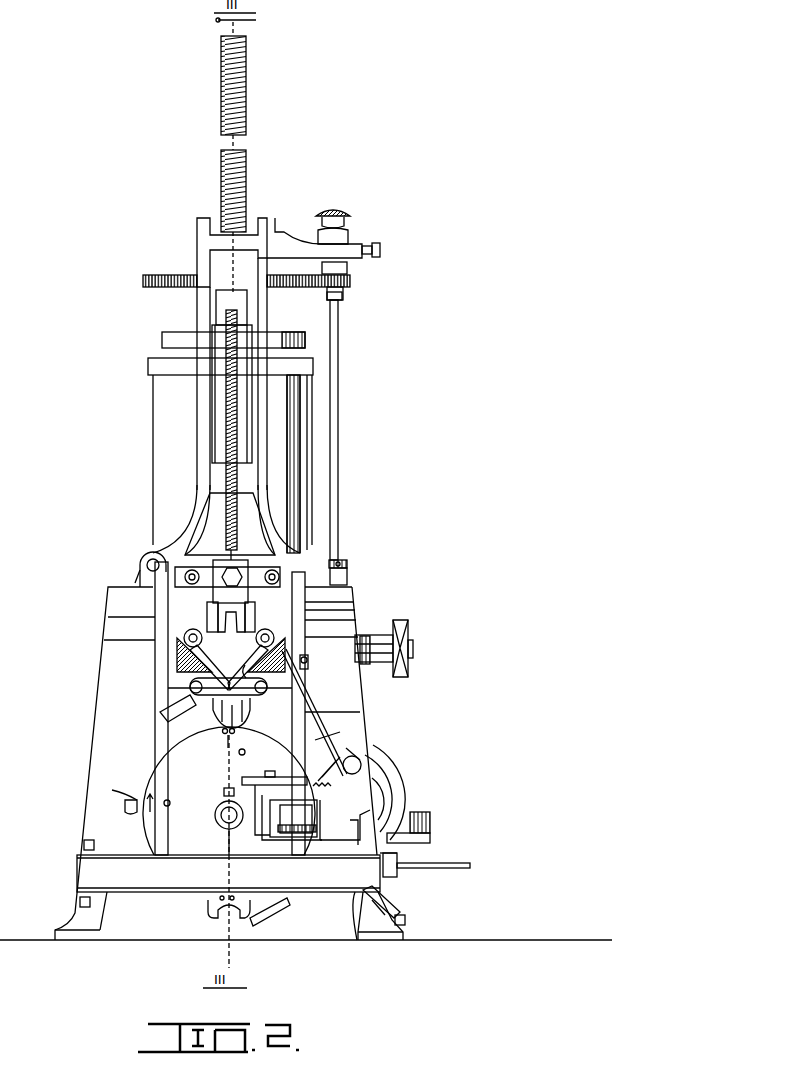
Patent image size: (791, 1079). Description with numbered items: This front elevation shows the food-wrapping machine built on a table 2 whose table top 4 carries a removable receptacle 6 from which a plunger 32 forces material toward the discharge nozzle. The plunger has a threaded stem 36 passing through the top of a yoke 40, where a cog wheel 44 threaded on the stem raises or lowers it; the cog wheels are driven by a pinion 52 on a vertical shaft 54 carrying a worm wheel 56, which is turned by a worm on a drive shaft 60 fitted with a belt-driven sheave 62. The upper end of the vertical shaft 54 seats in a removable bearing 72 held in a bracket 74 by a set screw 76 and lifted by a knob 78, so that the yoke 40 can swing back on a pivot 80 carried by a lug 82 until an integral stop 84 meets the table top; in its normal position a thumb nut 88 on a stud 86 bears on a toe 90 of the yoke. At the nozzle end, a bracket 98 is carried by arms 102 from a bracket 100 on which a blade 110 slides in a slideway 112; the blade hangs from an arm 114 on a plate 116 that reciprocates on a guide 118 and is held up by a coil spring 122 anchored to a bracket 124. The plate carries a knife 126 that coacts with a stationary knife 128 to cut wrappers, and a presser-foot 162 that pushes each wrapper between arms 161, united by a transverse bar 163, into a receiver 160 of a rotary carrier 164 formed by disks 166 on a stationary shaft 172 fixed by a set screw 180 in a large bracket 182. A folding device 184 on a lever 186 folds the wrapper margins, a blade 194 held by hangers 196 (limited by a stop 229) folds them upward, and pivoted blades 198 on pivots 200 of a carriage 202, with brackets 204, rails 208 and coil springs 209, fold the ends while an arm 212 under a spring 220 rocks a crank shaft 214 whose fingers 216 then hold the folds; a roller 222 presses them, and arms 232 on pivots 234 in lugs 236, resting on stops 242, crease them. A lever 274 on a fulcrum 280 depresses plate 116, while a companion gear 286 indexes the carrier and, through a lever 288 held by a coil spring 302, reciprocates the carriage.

The table 2 is at (100, 746).
The table top 4 is at (112, 602).
The removable receptacle 6 is at (160, 412).
The plunger 32 is at (165, 338).
The threaded stem 36 is at (222, 110).
The yoke 40 is at (208, 272).
The cog wheel 44 is at (143, 281).
The pinion 52 is at (350, 284).
The vertical shaft 54 is at (338, 413).
The worm wheel 56 is at (365, 662).
The drive shaft 60 is at (392, 655).
The sheave 62 is at (405, 672).
The removable bearing 72 is at (349, 269).
The bracket 74 is at (350, 243).
The set screw 76 is at (381, 249).
The knob 78 is at (338, 218).
The pivot 80 is at (153, 558).
The lug 82 is at (152, 578).
The integral stop 84 is at (138, 580).
The stud 86 is at (342, 560).
The thumb nut 88 is at (348, 563).
The toe 90 is at (348, 580).
The bracket 98 is at (205, 665).
The bracket 100 is at (185, 630).
The arm 102 is at (186, 578).
The blade 110 is at (215, 597).
The slideway 112 is at (210, 612).
The arm 114 is at (226, 575).
The plate 116 is at (352, 608).
The guide 118 is at (400, 640).
The coil spring 122 is at (228, 438).
The bracket 124 is at (218, 308).
The knife 126 is at (205, 680).
The stationary knife 128 is at (228, 692).
The receiver 160 is at (125, 800).
The arm 161 is at (308, 665).
The presser-foot 162 is at (245, 657).
The transverse bar 163 is at (215, 690).
The rotary carrier 164 is at (162, 775).
The disk 166 is at (165, 750).
The stationary shaft 172 is at (226, 822).
The set screw 180 is at (225, 790).
The bracket 182 is at (100, 870).
The folding device 184 is at (268, 922).
The lever 186 is at (280, 905).
The blade 194 is at (340, 731).
The hanger 196 is at (318, 712).
The pivoted blade 198 is at (297, 821).
The pivot 200 is at (275, 838).
The carriage 202 is at (398, 878).
The bracket 204 is at (255, 835).
The rail 208 is at (470, 865).
The coil spring 209 is at (322, 840).
The arm 212 is at (274, 766).
The crank shaft 214 is at (375, 772).
The finger 216 is at (392, 793).
The spring 220 is at (238, 755).
The roller 222 is at (357, 846).
The stop 229 is at (310, 693).
The arm 232 is at (357, 898).
The pivot 234 is at (380, 917).
The lug 236 is at (398, 910).
The stop 242 is at (405, 925).
The lever 274 is at (350, 749).
The fulcrum 280 is at (361, 762).
The companion gear 286 is at (400, 802).
The lever 288 is at (431, 838).
The coil spring 302 is at (431, 820).